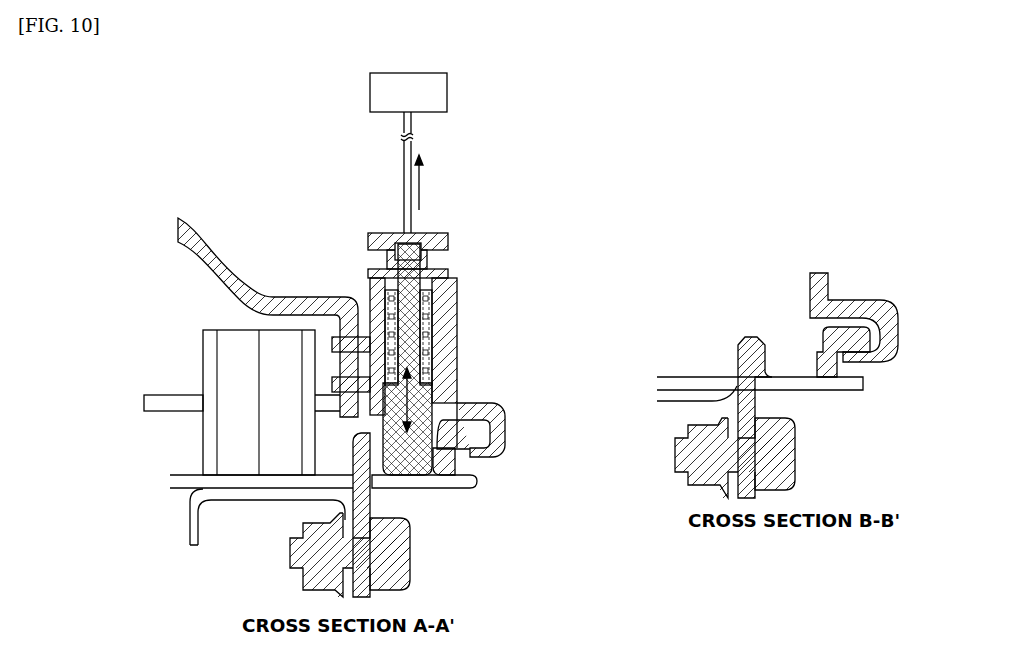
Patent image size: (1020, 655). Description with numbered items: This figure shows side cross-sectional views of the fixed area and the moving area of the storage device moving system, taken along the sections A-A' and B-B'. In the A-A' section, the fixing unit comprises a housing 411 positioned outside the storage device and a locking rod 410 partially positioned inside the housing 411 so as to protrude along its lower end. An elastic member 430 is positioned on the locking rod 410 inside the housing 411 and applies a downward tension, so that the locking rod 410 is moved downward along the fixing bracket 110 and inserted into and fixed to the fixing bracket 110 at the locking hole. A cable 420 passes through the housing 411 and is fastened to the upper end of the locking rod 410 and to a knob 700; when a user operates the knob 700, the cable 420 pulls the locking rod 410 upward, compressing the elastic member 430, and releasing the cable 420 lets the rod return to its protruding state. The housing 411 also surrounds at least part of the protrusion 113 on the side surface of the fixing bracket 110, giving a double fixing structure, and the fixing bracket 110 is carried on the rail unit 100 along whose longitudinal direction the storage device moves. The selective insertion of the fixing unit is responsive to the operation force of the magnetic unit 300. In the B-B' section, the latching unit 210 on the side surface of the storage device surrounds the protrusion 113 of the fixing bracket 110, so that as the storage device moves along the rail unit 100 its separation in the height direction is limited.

The rail unit 100 is at (196, 525).
The fixing bracket 110 is at (410, 560).
The protrusion 113 is at (488, 466).
The latching unit 210 is at (888, 322).
The magnetic unit 300 is at (212, 449).
The locking rod 410 is at (409, 312).
The housing 411 is at (507, 432).
The cable 420 is at (403, 178).
The elastic member 430 is at (392, 290).
The knob 700 is at (368, 92).